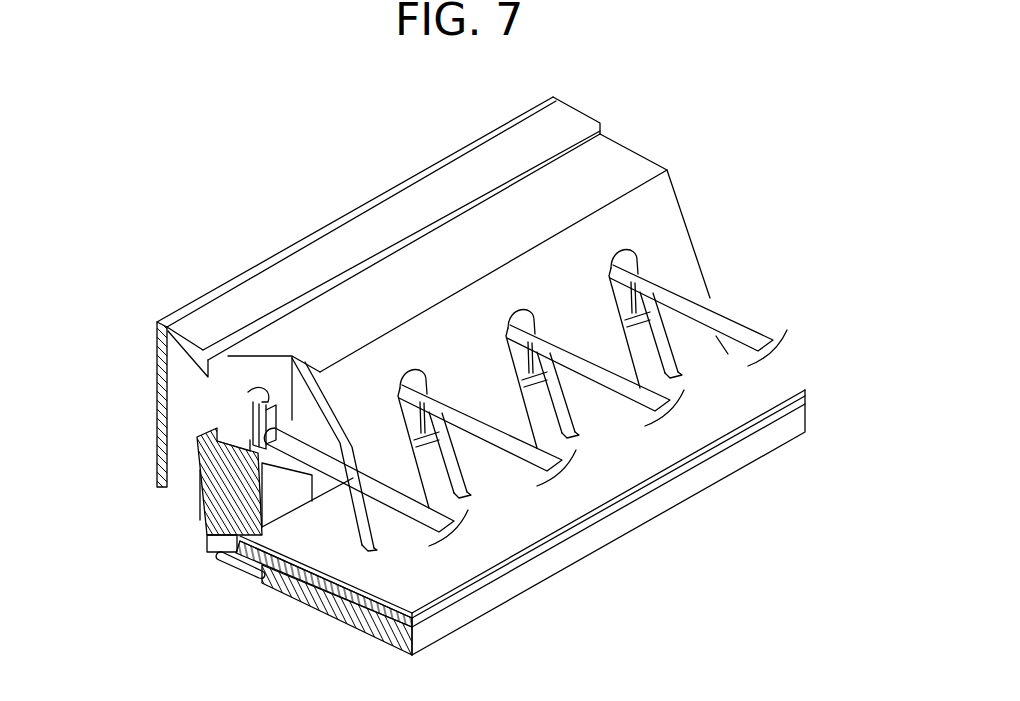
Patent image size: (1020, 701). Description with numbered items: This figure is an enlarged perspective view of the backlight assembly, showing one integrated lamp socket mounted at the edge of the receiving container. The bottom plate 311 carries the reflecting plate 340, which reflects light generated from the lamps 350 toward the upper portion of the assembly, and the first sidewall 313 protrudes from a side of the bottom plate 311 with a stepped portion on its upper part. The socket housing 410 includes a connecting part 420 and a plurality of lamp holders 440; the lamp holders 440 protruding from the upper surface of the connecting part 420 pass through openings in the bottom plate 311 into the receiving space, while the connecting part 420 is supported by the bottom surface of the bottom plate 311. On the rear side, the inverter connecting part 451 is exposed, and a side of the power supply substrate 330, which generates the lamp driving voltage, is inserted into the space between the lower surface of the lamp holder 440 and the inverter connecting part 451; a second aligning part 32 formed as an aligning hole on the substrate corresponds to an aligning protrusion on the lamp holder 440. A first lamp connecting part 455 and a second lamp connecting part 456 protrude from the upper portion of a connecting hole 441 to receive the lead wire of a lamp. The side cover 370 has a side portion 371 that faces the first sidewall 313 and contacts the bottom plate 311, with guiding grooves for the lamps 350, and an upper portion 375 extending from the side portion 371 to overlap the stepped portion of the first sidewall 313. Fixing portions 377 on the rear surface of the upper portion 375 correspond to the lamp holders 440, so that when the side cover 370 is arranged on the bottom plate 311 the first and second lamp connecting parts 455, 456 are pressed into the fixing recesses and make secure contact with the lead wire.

The second aligning part 32 is at (210, 537).
The bottom plate 311 is at (482, 585).
The first sidewall 313 is at (275, 255).
The power supply substrate 330 is at (450, 620).
The reflecting plate 340 is at (537, 557).
The lamps 350 is at (737, 327).
The side cover 370 is at (473, 209).
The side portion 371 is at (665, 208).
The upper portion 375 is at (580, 120).
The fixing portions 377 is at (277, 376).
The socket housing 410 is at (152, 481).
The connecting part 420 is at (197, 486).
The lamp holders 440 is at (197, 456).
The connecting hole 441 is at (205, 490).
The inverter connecting part 451 is at (248, 572).
The first lamp connecting part 455 is at (262, 412).
The second lamp connecting part 456 is at (248, 392).